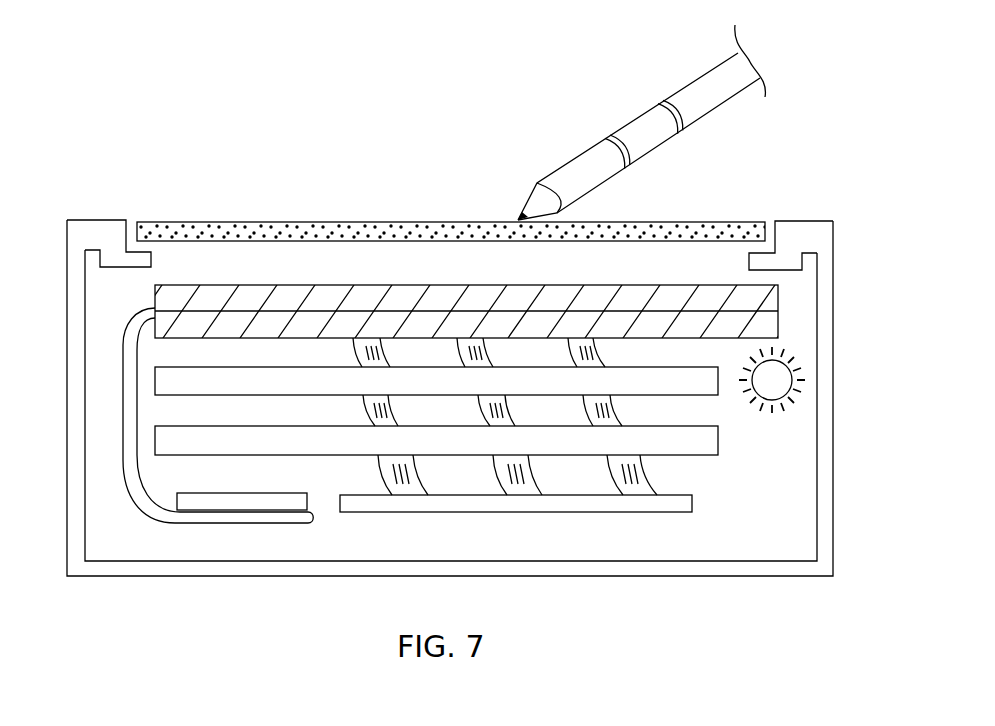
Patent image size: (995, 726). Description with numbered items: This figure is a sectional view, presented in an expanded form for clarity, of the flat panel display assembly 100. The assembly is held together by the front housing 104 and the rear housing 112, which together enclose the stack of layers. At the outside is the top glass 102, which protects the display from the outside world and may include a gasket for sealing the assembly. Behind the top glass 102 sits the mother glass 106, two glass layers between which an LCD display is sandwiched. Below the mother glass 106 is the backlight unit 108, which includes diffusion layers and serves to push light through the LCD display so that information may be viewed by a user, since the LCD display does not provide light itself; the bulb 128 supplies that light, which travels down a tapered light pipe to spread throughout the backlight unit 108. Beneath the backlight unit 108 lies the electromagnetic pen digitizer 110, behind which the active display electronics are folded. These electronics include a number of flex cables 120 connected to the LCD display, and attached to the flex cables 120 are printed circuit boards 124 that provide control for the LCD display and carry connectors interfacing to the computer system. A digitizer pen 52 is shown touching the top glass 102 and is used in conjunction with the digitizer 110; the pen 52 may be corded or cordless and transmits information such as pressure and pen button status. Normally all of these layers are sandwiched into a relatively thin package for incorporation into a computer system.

The digitizer pen 52 is at (648, 138).
The flat panel display assembly 100 is at (652, 610).
The top glass 102 is at (285, 222).
The front housing 104 is at (820, 240).
The mother glass 106 is at (253, 292).
The backlight unit 108 is at (230, 380).
The electromagnetic pen digitizer 110 is at (230, 437).
The rear housing 112 is at (828, 548).
The flex cables 120 is at (147, 503).
The printed circuit boards 124 is at (380, 503).
The bulb 128 is at (772, 388).